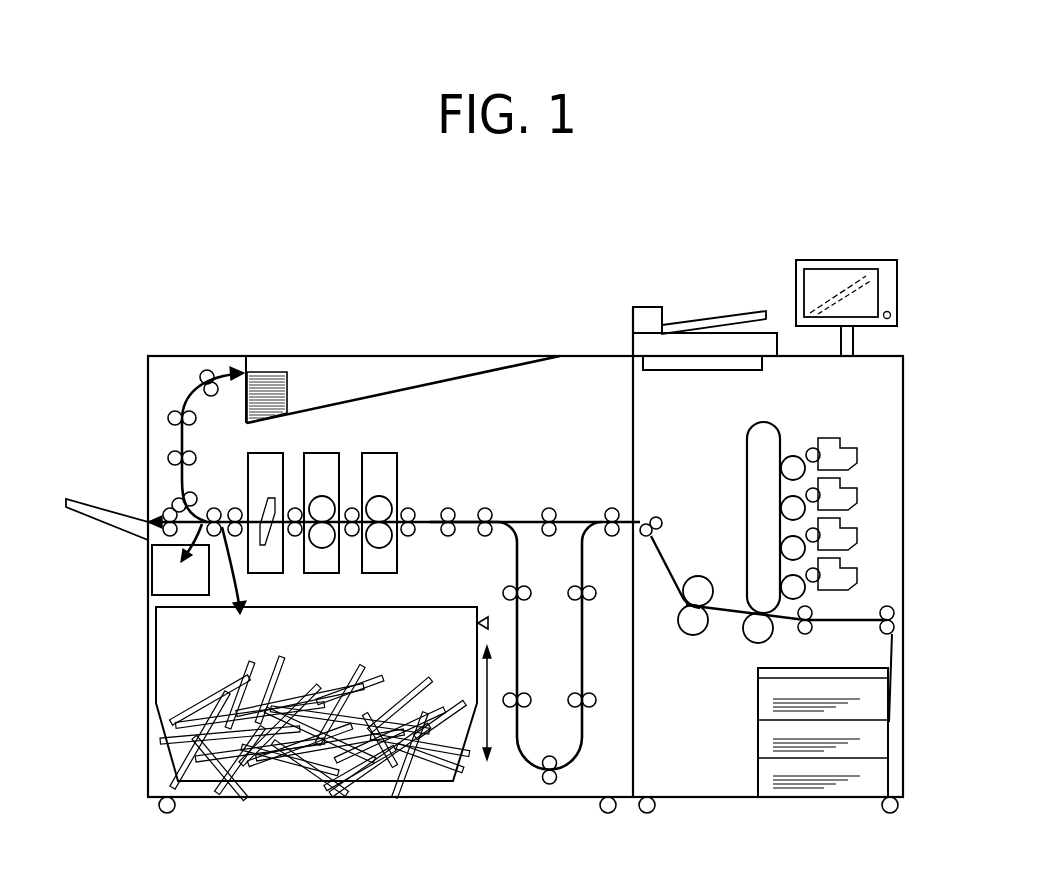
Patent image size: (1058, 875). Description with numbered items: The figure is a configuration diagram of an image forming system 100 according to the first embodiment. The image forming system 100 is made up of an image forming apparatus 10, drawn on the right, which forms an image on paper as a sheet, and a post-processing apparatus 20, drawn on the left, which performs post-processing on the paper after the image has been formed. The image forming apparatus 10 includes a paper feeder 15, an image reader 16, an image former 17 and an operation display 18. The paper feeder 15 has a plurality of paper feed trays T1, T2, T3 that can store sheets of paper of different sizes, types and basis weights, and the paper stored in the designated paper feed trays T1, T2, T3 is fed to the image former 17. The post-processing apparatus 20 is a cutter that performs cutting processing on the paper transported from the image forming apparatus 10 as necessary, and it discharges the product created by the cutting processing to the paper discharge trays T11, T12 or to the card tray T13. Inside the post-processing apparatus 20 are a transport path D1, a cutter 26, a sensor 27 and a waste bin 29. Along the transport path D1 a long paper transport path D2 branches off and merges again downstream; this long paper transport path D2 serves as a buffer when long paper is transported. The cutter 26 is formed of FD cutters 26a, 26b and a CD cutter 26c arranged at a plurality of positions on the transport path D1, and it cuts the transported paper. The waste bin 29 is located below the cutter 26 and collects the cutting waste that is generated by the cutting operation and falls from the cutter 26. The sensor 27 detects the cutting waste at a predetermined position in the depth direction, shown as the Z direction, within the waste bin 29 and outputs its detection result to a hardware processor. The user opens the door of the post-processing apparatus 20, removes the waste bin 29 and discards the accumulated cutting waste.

The image forming system 100 is at (892, 238).
The image forming apparatus 10 is at (897, 356).
The paper feeder 15 is at (823, 732).
The image reader 16 is at (650, 307).
The image former 17 is at (805, 415).
The operation display 18 is at (812, 258).
The post-processing apparatus 20 is at (181, 355).
The cutter 26 is at (361, 425).
The FD cutter 26a is at (415, 445).
The FD cutter 26b is at (331, 453).
The CD cutter 26c is at (275, 453).
The sensor 27 is at (485, 616).
The waste bin 29 is at (408, 605).
The transport path D1 is at (466, 519).
The long paper transport path D2 is at (584, 543).
The paper feed tray T1 is at (880, 697).
The paper feed tray T2 is at (880, 742).
The paper feed tray T3 is at (880, 783).
The paper discharge tray T11 is at (83, 502).
The paper discharge tray T12 is at (493, 365).
The card tray T13 is at (157, 583).
The Z direction Z is at (493, 703).